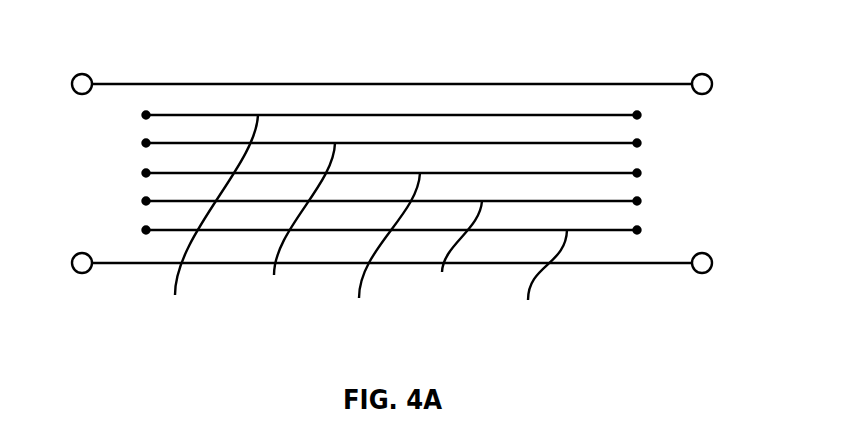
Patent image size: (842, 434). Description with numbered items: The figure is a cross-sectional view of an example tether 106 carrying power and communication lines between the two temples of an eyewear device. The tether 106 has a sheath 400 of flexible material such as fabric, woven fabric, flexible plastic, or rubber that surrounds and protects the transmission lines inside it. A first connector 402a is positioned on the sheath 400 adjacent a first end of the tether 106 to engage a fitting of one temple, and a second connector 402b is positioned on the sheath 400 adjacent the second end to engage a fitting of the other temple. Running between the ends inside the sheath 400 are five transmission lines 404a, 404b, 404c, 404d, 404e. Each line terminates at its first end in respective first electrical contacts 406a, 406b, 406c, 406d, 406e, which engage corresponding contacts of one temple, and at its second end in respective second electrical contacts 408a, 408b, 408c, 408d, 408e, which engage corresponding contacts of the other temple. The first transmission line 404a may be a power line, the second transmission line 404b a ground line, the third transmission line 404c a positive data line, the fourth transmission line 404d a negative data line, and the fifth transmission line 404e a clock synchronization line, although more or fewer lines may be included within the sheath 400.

The tether 106 is at (377, 84).
The sheath 400 is at (300, 84).
The first connector 402a is at (81, 74).
The second connector 402b is at (703, 74).
The first transmission line 404a is at (203, 223).
The second transmission line 404b is at (291, 225).
The third transmission line 404c is at (376, 253).
The fourth transmission line 404d is at (448, 253).
The fifth transmission line 404e is at (535, 282).
The first electrical contact 406a is at (147, 113).
The first electrical contact 406b is at (146, 143).
The first electrical contact 406c is at (146, 173).
The first electrical contact 406d is at (146, 201).
The first electrical contact 406e is at (146, 230).
The second electrical contact 408a is at (637, 113).
The second electrical contact 408b is at (637, 143).
The second electrical contact 408c is at (637, 173).
The second electrical contact 408d is at (637, 201).
The second electrical contact 408e is at (637, 230).